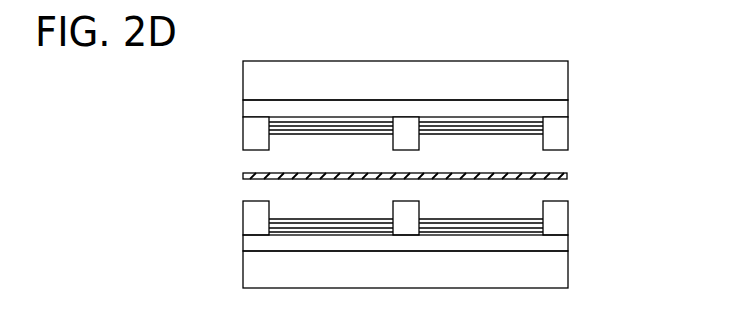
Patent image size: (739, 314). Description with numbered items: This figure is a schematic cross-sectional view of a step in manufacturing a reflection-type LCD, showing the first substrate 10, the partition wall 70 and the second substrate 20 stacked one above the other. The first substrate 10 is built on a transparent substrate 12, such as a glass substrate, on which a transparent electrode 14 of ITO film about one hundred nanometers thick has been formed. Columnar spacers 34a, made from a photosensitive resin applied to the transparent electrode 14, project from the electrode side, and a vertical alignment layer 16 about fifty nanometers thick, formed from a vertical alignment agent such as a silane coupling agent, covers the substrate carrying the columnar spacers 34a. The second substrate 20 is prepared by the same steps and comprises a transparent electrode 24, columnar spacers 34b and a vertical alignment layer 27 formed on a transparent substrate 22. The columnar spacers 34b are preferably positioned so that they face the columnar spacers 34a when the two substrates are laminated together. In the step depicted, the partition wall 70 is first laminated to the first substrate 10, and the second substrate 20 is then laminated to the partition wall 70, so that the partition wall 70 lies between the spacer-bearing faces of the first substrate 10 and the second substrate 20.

The first substrate 10 is at (463, 100).
The transparent substrate 12 is at (555, 72).
The transparent electrode 14 is at (555, 107).
The columnar spacers 34a is at (557, 131).
The vertical alignment layer 16 is at (435, 133).
The partition wall 70 is at (567, 176).
The second substrate 20 is at (463, 246).
The vertical alignment layer 27 is at (525, 223).
The columnar spacers 34b is at (553, 220).
The transparent electrode 24 is at (550, 242).
The transparent substrate 22 is at (435, 274).